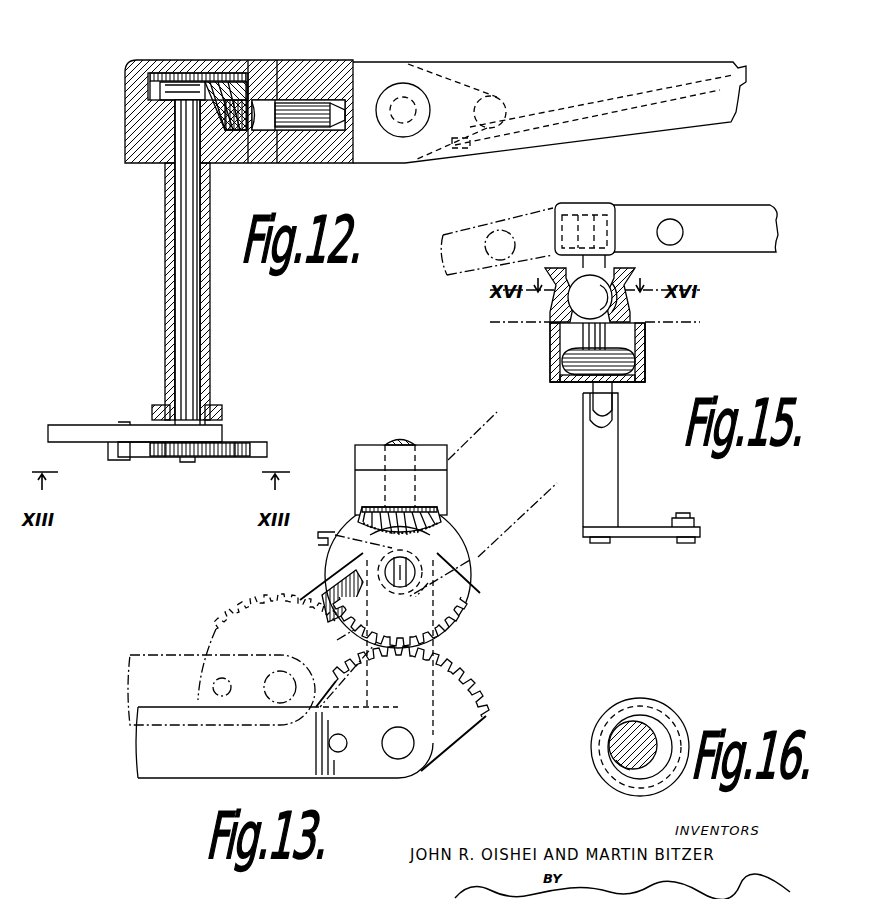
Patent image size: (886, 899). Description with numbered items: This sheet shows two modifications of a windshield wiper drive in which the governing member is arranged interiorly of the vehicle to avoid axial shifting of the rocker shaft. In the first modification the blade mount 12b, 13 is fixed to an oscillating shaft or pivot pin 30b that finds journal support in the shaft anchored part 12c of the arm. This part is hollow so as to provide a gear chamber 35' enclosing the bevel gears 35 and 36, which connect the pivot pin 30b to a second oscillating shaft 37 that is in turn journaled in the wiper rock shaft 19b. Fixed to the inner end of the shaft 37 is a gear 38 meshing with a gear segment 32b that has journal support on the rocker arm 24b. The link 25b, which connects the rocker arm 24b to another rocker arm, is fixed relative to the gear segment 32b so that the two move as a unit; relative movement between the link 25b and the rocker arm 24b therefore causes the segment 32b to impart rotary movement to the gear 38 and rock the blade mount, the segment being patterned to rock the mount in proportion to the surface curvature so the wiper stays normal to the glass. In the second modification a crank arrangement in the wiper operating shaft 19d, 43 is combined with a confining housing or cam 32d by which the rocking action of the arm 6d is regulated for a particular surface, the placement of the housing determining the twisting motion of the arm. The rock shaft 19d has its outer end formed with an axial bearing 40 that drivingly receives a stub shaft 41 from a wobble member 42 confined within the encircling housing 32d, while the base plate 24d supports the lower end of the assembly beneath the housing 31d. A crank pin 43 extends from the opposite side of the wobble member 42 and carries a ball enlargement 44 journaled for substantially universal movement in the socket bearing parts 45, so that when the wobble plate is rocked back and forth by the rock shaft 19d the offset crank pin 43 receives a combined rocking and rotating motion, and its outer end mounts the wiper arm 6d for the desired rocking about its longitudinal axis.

In FIG. 15, the wiper arm 6d is at (655, 204).
In FIG. 12, the blade mount 12b is at (332, 62).
In FIG. 13, the blade mount 12b is at (367, 445).
In FIG. 12, the shaft anchored part of the arm 12c is at (150, 62).
In FIG. 13, the shaft anchored part of the arm 12c is at (448, 488).
In FIG. 12, the blade mount 13 is at (600, 62).
In FIG. 12, the wiper rock shaft 19b is at (166, 324).
In FIG. 15, the rock shaft 19d is at (614, 440).
In FIG. 12, the rocker arm 24b is at (215, 405).
In FIG. 13, the rocker arm 24b is at (440, 548).
In FIG. 15, the base plate 24d is at (645, 527).
In FIG. 13, the link 25b is at (180, 775).
In FIG. 12, the oscillating shaft or pivot pin 30b is at (275, 132).
In FIG. 13, the oscillating shaft or pivot pin 30b is at (418, 440).
In FIG. 15, the housing 31d is at (646, 370).
In FIG. 12, the gear segment 32b is at (112, 460).
In FIG. 13, the gear segment 32b is at (468, 682).
In FIG. 15, the confining housing or cam 32d is at (556, 336).
In FIG. 16, the confining housing or cam 32d is at (678, 712).
In FIG. 12, the bevel gear 35 is at (203, 77).
In FIG. 13, the bevel gear 35 is at (380, 513).
In FIG. 12, the gear chamber 35' is at (207, 62).
In FIG. 12, the bevel gear 36 is at (242, 132).
In FIG. 13, the bevel gear 36 is at (440, 515).
In FIG. 12, the second oscillating shaft 37 is at (170, 225).
In FIG. 12, the gear 38 is at (226, 460).
In FIG. 13, the gear 38 is at (462, 618).
In FIG. 15, the axial bearing 40 is at (613, 405).
In FIG. 15, the stub shaft 41 is at (590, 404).
In FIG. 16, the stub shaft 41 is at (610, 772).
In FIG. 15, the wobble member 42 is at (565, 360).
In FIG. 16, the wobble member 42 is at (650, 704).
In FIG. 15, the crank pin 43 is at (646, 338).
In FIG. 16, the crank pin 43 is at (612, 722).
In FIG. 15, the ball enlargement 44 is at (580, 293).
In FIG. 16, the ball enlargement 44 is at (612, 748).
In FIG. 15, the socket bearing parts 45 is at (613, 292).